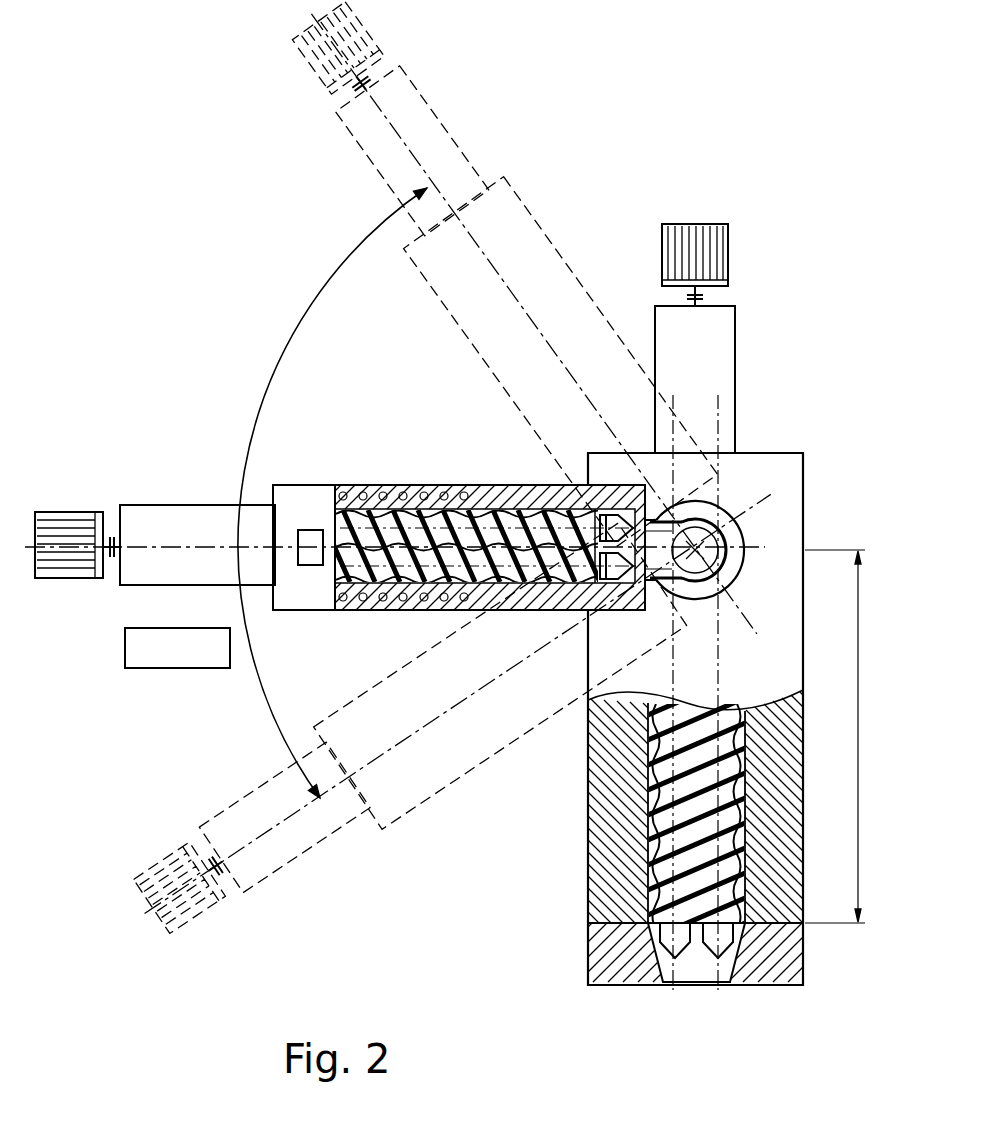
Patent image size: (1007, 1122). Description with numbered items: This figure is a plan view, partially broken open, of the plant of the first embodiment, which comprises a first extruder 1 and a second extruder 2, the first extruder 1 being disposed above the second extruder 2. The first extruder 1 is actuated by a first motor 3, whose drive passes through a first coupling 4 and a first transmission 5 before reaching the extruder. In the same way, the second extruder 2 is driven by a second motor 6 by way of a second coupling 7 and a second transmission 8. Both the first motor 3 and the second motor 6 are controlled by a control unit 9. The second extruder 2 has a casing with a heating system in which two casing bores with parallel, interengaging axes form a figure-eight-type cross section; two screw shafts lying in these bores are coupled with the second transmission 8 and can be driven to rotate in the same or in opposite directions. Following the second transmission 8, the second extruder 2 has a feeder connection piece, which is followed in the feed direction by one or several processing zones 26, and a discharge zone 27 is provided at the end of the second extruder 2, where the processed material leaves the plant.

The first extruder 1 is at (306, 503).
The second extruder 2 is at (781, 513).
The first motor 3 is at (63, 514).
The first coupling 4 is at (113, 535).
The first transmission 5 is at (183, 507).
The second motor 6 is at (730, 262).
The second coupling 7 is at (705, 298).
The second transmission 8 is at (703, 358).
The control unit 9 is at (130, 648).
The processing zones 26 is at (854, 736).
The discharge zone 27 is at (727, 972).